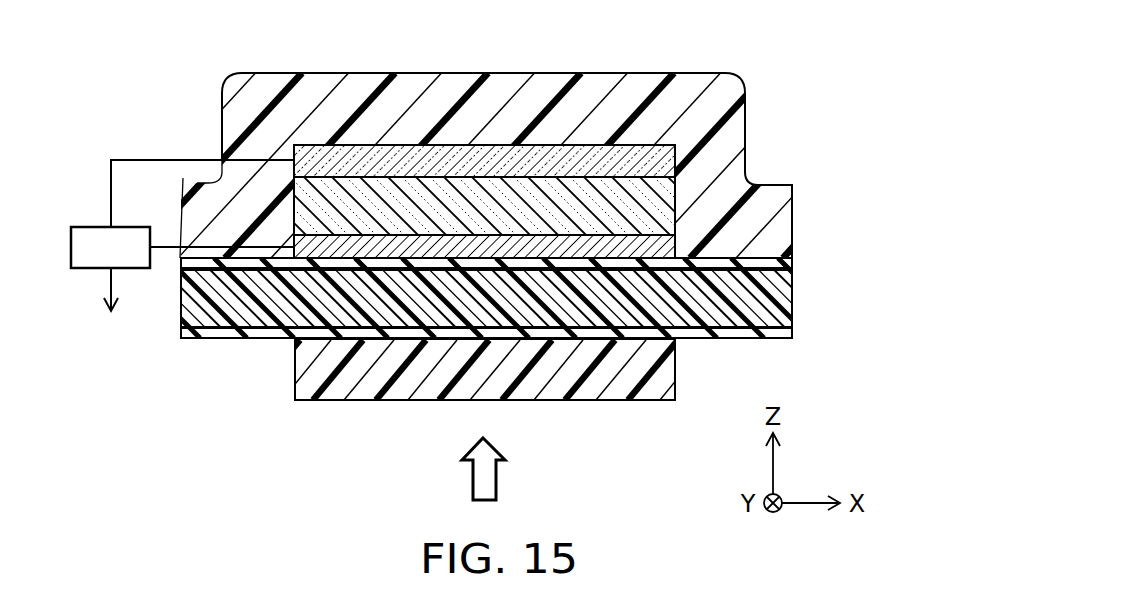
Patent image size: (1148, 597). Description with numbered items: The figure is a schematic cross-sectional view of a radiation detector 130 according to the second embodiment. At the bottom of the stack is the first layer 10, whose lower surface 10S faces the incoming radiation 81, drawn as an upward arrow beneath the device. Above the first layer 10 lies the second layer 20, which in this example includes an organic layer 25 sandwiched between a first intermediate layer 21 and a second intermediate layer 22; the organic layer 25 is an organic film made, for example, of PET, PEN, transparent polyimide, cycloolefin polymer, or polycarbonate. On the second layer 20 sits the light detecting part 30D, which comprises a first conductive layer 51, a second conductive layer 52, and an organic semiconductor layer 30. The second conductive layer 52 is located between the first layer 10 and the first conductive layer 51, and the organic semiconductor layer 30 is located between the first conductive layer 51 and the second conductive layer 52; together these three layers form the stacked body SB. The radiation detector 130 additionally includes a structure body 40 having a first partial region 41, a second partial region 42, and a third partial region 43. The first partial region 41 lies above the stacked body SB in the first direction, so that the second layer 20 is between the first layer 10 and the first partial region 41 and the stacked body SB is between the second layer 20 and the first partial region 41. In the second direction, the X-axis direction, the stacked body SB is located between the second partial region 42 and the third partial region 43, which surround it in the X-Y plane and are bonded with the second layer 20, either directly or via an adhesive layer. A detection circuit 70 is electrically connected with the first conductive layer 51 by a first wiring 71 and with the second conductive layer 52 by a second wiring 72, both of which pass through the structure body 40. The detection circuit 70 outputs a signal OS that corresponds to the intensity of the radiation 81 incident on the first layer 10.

The radiation detector 130 is at (770, 56).
The structure body 40 is at (519, 142).
The first partial region 41 is at (494, 108).
The second partial region 42 is at (237, 217).
The third partial region 43 is at (702, 198).
The first conductive layer 51 is at (660, 163).
The organic semiconductor layer 30 is at (667, 213).
The second conductive layer 52 is at (660, 243).
The stacked body SB is at (566, 187).
The light detecting part 30D is at (893, 155).
The second layer 20 is at (509, 297).
The first intermediate layer 21 is at (790, 262).
The organic layer 25 is at (790, 298).
The second intermediate layer 22 is at (512, 332).
The first layer 10 is at (664, 366).
The substrate surface 10S is at (683, 389).
The detection circuit 70 is at (100, 227).
The first wiring 71 is at (110, 175).
The second wiring 72 is at (165, 252).
The signal OS is at (108, 290).
The radiation 81 is at (473, 478).